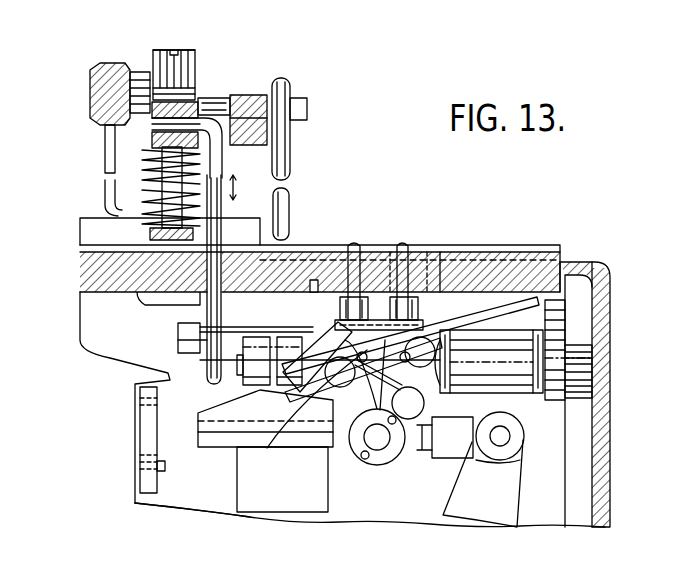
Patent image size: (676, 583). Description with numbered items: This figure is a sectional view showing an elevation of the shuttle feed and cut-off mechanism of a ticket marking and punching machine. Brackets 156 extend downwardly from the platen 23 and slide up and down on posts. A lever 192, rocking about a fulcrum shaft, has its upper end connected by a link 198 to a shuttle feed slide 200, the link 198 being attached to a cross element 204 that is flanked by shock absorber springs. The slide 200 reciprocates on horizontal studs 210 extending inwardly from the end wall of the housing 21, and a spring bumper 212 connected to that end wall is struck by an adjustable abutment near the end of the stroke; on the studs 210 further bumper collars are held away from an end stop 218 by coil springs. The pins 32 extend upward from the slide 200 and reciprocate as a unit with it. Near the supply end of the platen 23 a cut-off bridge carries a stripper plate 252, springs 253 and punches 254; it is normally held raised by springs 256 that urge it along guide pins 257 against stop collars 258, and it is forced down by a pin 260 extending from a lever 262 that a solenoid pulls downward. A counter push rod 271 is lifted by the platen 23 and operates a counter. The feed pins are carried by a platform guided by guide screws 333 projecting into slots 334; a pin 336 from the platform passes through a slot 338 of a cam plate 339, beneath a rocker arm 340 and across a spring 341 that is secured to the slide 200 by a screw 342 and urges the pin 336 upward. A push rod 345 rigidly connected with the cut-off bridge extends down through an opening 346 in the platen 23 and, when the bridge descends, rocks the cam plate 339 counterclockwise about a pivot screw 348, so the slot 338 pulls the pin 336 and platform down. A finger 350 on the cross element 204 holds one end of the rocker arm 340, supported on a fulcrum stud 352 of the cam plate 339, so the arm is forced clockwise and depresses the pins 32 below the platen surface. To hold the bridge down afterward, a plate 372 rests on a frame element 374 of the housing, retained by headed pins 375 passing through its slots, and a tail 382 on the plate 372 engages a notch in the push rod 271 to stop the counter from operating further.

The housing 21 is at (608, 476).
The platen 23 is at (532, 250).
The pins 32 is at (405, 250).
The brackets 156 is at (285, 497).
The lever 192 is at (516, 506).
The link 198 is at (446, 458).
The shuttle feed slide 200 is at (510, 326).
The cross element 204 is at (395, 456).
The studs 210 is at (594, 360).
The spring bumper 212 is at (592, 336).
The end stop 218 is at (252, 324).
The stripper plate 252 is at (150, 233).
The springs 253 is at (142, 196).
The punches 254 is at (225, 222).
The springs 256 is at (142, 172).
The guide pins 257 is at (197, 73).
The stop collars 258 is at (195, 72).
The pin 260 is at (161, 50).
The lever 262 is at (92, 76).
The push rod 271 is at (289, 190).
The guide screws 333 is at (440, 330).
The slots 334 is at (340, 322).
The pin 336 is at (370, 330).
The slot 338 is at (365, 440).
The cam plate 339 is at (233, 430).
The rocker arm 340 is at (290, 378).
The spring 341 is at (380, 445).
The screw 342 is at (440, 420).
The push rod 345 is at (208, 343).
The opening 346 is at (216, 268).
The pivot screw 348 is at (452, 334).
The finger 350 is at (345, 448).
The fulcrum stud 352 is at (330, 435).
The plate 372 is at (267, 122).
The frame element 374 is at (264, 150).
The pins 375 is at (235, 98).
The tail 382 is at (307, 106).